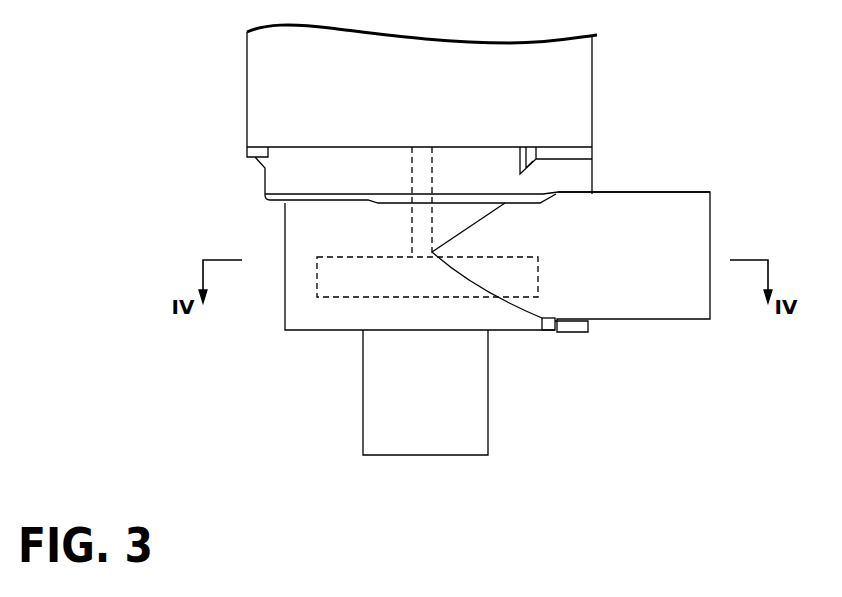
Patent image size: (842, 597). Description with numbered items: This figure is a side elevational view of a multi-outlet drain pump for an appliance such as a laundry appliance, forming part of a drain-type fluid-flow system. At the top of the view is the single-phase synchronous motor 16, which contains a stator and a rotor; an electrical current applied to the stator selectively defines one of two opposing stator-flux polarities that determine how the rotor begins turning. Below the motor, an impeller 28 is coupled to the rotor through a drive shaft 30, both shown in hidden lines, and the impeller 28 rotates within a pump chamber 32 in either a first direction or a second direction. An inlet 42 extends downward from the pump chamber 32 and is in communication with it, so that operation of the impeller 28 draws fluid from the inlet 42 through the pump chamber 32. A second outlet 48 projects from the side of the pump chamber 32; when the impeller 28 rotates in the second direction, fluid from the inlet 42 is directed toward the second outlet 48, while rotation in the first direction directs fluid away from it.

The single-phase synchronous motor 16 is at (600, 71).
The impeller 28 is at (337, 287).
The drive shaft 30 is at (412, 175).
The pump chamber 32 is at (357, 232).
The inlet 42 is at (450, 460).
The second outlet 48 is at (660, 190).